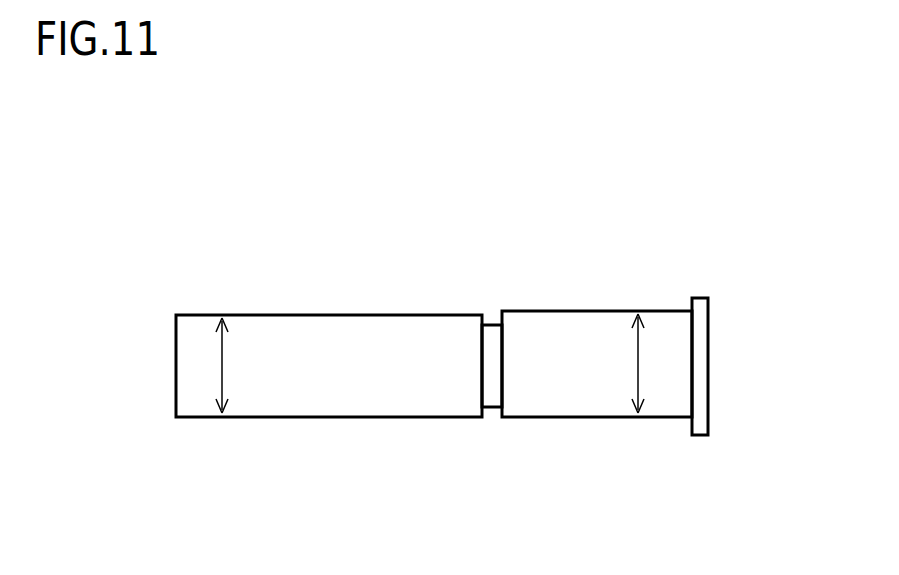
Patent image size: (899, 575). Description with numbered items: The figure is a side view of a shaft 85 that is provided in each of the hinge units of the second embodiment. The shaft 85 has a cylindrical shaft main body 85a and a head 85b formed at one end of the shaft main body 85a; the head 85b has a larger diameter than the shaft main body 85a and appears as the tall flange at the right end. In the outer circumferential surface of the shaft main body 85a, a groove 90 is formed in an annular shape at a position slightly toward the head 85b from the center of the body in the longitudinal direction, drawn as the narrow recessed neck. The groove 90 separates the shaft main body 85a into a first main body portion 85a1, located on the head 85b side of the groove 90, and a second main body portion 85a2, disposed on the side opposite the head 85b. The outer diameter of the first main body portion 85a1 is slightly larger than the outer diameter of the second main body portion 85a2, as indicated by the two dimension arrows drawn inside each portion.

The shaft 85 is at (592, 256).
The shaft main body 85a is at (558, 507).
The first main body portion 85a1 is at (607, 412).
The second main body portion 85a2 is at (332, 412).
The head 85b is at (708, 374).
The groove 90 is at (490, 318).